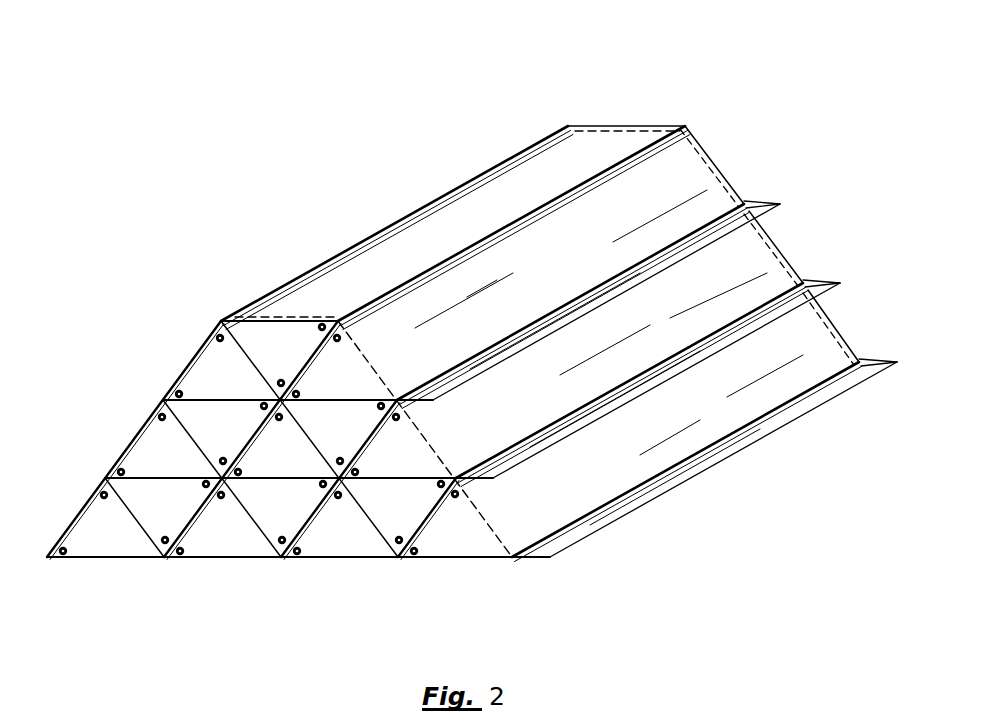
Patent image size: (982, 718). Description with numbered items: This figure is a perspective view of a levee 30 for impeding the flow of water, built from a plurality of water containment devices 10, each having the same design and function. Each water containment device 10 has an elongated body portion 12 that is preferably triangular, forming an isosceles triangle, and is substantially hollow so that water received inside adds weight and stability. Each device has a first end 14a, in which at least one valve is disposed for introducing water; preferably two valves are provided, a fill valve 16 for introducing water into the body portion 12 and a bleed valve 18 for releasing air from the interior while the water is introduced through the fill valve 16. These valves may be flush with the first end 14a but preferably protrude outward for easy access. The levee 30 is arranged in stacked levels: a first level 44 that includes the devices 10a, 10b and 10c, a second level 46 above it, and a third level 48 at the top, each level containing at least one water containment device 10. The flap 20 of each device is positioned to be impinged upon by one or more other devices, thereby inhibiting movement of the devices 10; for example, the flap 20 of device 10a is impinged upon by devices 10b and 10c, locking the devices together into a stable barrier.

The water containment device 10 is at (656, 92).
The water containment device 10a is at (102, 550).
The water containment device 10b is at (223, 550).
The water containment device 10c is at (157, 555).
The body portion 12 is at (700, 153).
The first end 14a is at (473, 560).
The fill valve 16 is at (430, 490).
The bleed valve 18 is at (458, 490).
The flap 20 is at (592, 304).
The levee 30 is at (396, 186).
The first level 44 is at (880, 340).
The second level 46 is at (824, 262).
The third level 48 is at (766, 182).